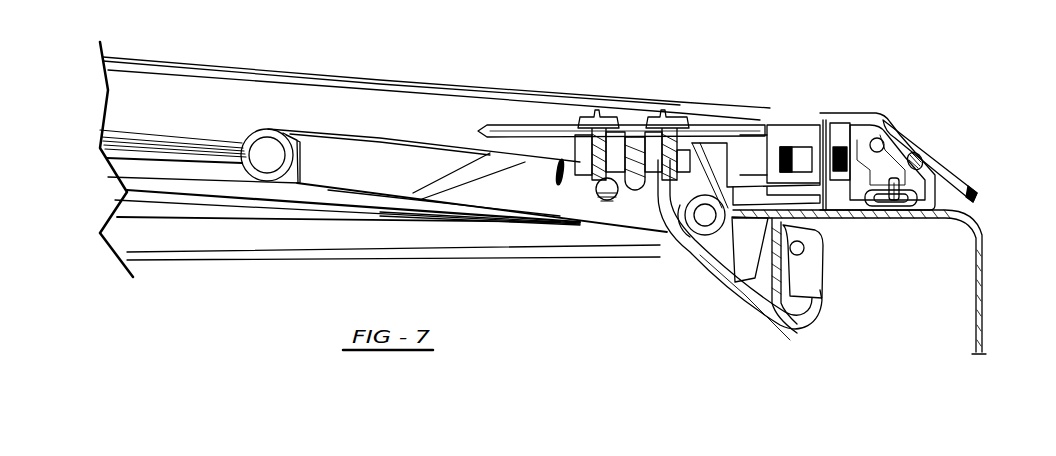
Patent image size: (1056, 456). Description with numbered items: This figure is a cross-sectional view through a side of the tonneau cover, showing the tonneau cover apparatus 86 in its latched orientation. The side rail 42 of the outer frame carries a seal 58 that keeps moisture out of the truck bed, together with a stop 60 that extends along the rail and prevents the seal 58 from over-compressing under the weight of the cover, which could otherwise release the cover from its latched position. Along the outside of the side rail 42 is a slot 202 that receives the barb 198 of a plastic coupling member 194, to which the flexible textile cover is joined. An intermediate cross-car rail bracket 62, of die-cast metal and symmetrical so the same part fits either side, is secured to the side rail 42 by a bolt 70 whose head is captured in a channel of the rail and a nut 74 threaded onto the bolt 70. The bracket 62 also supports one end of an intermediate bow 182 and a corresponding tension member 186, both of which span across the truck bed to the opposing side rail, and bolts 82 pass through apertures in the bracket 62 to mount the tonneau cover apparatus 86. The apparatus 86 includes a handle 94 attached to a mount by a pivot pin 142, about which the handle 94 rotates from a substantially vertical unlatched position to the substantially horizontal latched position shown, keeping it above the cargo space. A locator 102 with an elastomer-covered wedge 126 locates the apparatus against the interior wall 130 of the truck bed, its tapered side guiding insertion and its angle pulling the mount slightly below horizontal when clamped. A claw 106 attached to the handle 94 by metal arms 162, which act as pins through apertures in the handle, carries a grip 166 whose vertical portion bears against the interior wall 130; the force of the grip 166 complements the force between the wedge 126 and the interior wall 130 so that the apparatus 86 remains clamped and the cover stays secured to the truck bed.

The side rail 42 is at (865, 113).
The seal 58 is at (905, 205).
The stop 60 is at (845, 205).
The intermediate cross-car rail bracket 62 is at (743, 117).
The bolt 70 is at (838, 148).
The nut 74 is at (810, 150).
The bolt 82 is at (662, 110).
The tonneau cover apparatus 86 is at (608, 270).
The handle 94 is at (525, 200).
The locator 102 is at (748, 290).
The claw 106 is at (828, 327).
The wedge 126 is at (740, 256).
The interior wall 130 is at (798, 300).
The pivot pin 142 is at (705, 216).
The arm 162 is at (758, 318).
The grip 166 is at (817, 280).
The intermediate bow 182 is at (248, 93).
The tension member 186 is at (288, 237).
The coupling member 194 is at (898, 133).
The barb 198 is at (913, 167).
The slot 202 is at (927, 207).